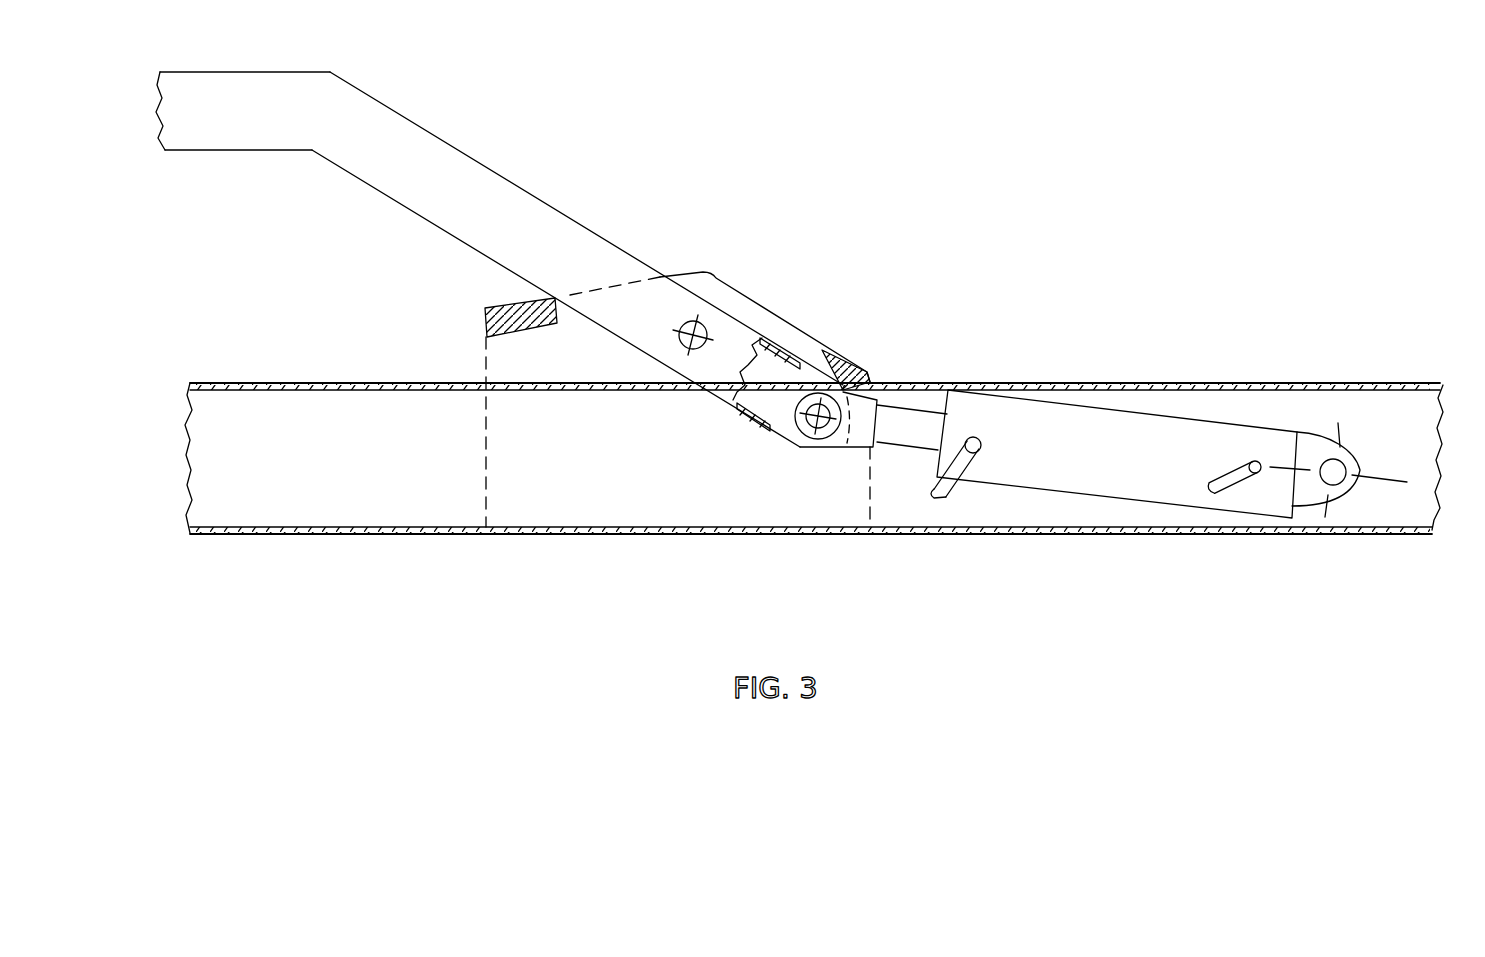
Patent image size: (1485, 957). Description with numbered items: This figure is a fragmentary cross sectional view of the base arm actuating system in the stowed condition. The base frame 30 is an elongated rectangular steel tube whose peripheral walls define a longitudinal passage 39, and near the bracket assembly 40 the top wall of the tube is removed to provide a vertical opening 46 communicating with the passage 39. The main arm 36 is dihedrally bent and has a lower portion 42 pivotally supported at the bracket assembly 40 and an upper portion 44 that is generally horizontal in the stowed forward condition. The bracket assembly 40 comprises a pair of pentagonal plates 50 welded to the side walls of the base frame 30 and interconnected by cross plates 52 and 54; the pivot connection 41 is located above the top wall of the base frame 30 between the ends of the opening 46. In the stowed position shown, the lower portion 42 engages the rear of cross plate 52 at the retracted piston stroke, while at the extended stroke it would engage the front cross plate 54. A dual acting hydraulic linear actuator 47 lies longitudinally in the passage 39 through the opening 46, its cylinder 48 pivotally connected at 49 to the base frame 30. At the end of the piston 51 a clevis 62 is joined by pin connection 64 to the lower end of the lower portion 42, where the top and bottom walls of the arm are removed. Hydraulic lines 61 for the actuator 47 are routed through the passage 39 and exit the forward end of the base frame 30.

The base frame 30 is at (814, 467).
The main arm 36 is at (499, 236).
The longitudinal passage 39 is at (338, 493).
The pivot bracket assembly 40 is at (673, 342).
The pivot connection 41 is at (700, 320).
The lower portion 42 is at (510, 207).
The upper portion 44 is at (280, 85).
The vertical opening 46 is at (530, 392).
The hydraulic linear actuator 47 is at (1172, 493).
The cylinder 48 is at (1147, 485).
The pivot connection of cylinder 49 is at (1337, 480).
The pentagonal plates 50 is at (685, 268).
The piston 51 is at (903, 436).
The cross plate 52 is at (490, 300).
The front cross plate 54 is at (853, 358).
The hydraulic lines 61 is at (978, 462).
The clevis 62 is at (840, 452).
The pin connection 64 is at (800, 418).